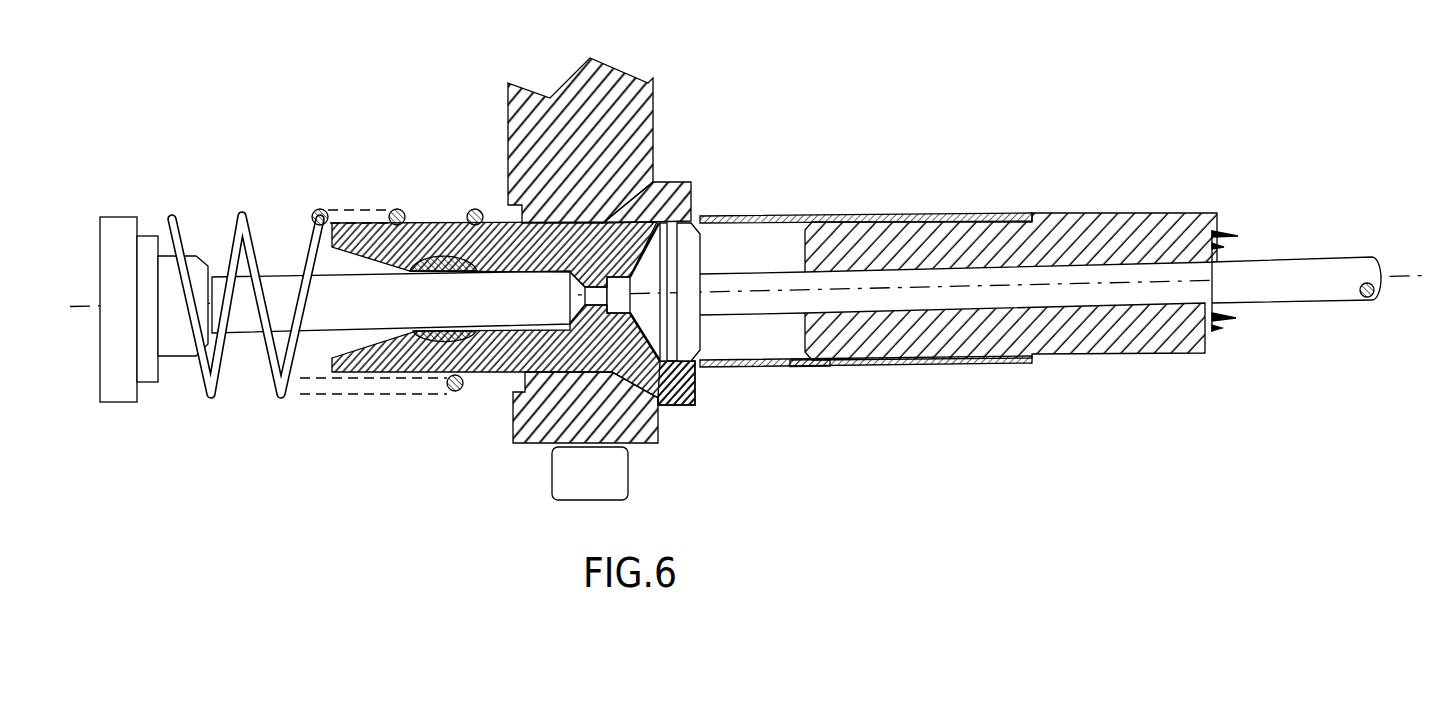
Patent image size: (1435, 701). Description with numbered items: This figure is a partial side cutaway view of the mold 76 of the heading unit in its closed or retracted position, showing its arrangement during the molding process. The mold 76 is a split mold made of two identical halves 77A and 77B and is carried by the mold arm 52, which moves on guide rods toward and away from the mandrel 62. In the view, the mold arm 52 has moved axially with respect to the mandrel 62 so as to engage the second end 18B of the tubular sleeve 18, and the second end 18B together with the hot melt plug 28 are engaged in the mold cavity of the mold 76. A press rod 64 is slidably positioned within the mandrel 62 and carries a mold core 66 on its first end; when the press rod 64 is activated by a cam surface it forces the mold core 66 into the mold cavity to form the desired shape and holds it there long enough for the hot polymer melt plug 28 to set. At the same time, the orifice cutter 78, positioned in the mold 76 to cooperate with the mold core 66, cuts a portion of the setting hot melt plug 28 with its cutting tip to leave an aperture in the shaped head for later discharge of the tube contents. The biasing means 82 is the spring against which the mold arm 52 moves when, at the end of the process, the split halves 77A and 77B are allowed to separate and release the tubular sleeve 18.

The tubular sleeve 18 is at (988, 213).
The second end of tubular sleeve 18B is at (808, 363).
The hot melt plug 28 is at (652, 343).
The mold arm 52 is at (557, 96).
The mandrel 62 is at (1093, 355).
The press rod 64 is at (770, 305).
The mold core 66 is at (696, 262).
The mold 76 is at (493, 372).
The mold half 77A is at (683, 405).
The mold half 77B is at (440, 222).
The orifice cutter 78 is at (285, 286).
The biasing means 82 is at (122, 225).